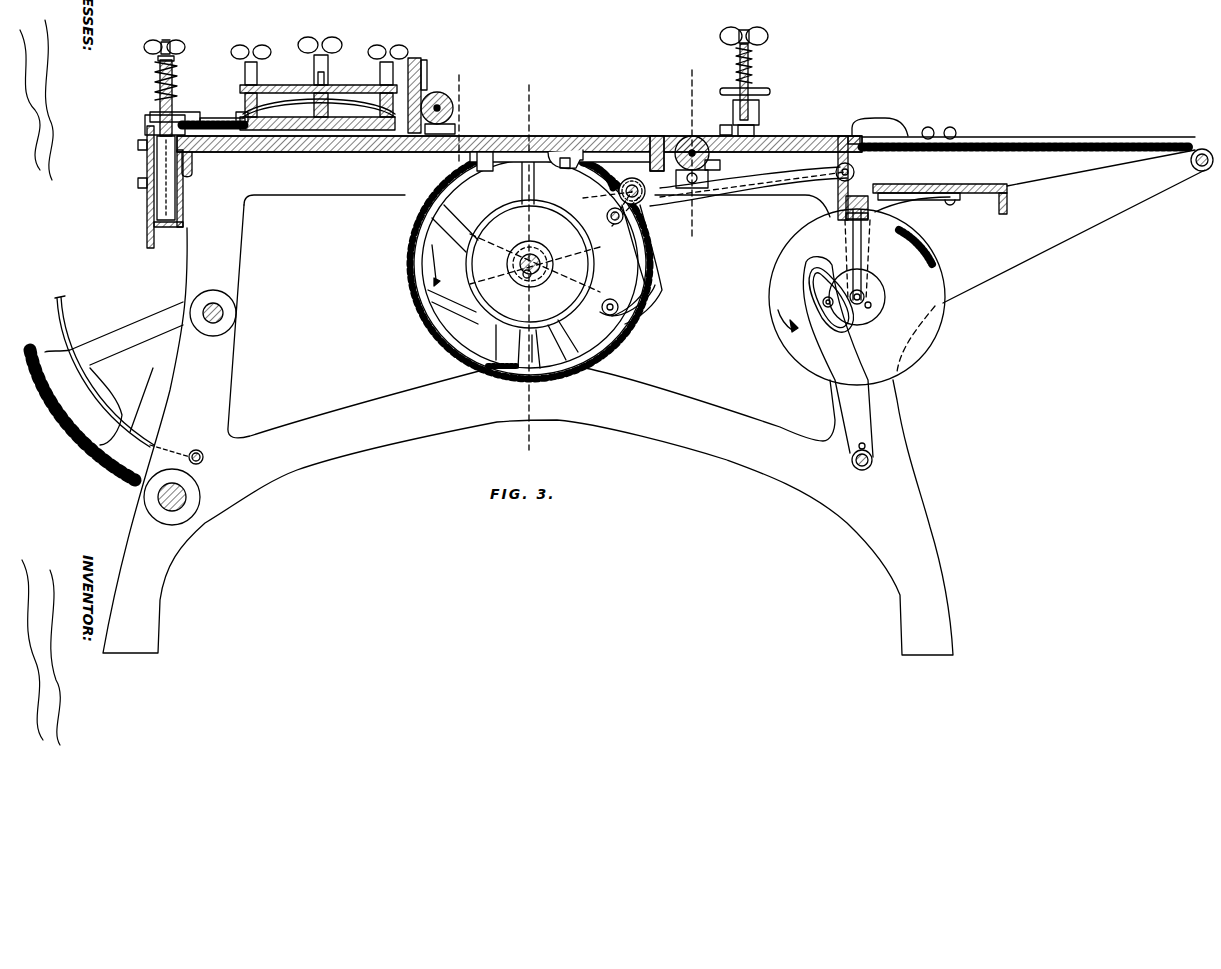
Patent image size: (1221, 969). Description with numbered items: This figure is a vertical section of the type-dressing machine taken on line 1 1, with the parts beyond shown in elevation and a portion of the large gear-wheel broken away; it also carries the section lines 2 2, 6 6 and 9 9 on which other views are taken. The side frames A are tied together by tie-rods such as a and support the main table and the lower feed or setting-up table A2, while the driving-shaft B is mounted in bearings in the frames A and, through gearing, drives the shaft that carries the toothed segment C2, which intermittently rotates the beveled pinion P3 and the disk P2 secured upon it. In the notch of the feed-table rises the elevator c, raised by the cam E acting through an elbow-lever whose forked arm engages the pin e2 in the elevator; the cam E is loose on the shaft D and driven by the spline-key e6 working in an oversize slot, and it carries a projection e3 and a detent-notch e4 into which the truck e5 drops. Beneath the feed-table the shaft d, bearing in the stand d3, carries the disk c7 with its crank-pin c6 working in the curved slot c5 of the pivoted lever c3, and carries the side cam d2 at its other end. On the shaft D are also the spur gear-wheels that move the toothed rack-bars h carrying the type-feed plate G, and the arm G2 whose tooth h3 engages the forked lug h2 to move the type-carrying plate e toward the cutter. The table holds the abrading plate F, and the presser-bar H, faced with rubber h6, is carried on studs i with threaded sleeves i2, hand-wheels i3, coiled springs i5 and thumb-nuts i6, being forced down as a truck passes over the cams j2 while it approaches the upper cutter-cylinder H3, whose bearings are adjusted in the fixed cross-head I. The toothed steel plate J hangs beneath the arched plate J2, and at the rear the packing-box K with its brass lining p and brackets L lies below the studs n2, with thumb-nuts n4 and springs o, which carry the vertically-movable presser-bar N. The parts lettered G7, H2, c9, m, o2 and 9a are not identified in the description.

The side frames A is at (654, 402).
The feed or setting-up table A2 is at (942, 185).
The driving-shaft B is at (186, 497).
The toothed segment C2 is at (82, 415).
The shaft D is at (519, 262).
The cam E is at (530, 264).
The abrading or grinding plate F is at (545, 150).
The type-feed plate G is at (940, 128).
The arm G2 is at (609, 227).
The toothed segment G7 is at (582, 178).
The presser-bar or cross-head H is at (760, 118).
The lever H2 is at (640, 290).
The upper cutter-cylinder H3 is at (456, 112).
The fixed cross-head I is at (414, 82).
The rectangular steel plate J is at (325, 132).
The arched plate J2 is at (277, 84).
The packing-box K is at (161, 181).
The brackets L is at (166, 178).
The vertically-movable presser-bar N is at (158, 100).
The disk P2 is at (205, 122).
The beveled pinion P3 is at (220, 120).
The tie-rod a is at (868, 462).
The elevator c is at (850, 140).
The pivoted levers c3 is at (812, 262).
The curved slot c5 is at (838, 320).
The crank-pin c6 is at (822, 302).
The disk c7 is at (876, 307).
The arrow/arm c9 is at (821, 344).
The shaft d is at (864, 296).
The side cam d2 is at (920, 252).
The stand d3 is at (863, 255).
The type-carrying steel plate e is at (843, 138).
The pin e2 is at (836, 174).
The projection e3 is at (600, 303).
The detent-notch e4 is at (632, 183).
The truck e5 is at (608, 315).
The spline-key e6 is at (526, 279).
The toothed rack-bars h is at (1020, 142).
The forked lug h2 is at (575, 160).
The tooth h3 is at (605, 205).
The rubber h6 is at (726, 125).
The vertical studs i is at (321, 38).
The threaded sleeve i2 is at (330, 90).
The hand-wheel i3 is at (760, 90).
The coiled springs i5 is at (756, 62).
The thumb-nuts i6 is at (765, 35).
The cams j2 is at (712, 150).
The screw m is at (135, 190).
The vertical studs n2 is at (164, 38).
The thumb-nut n4 is at (178, 47).
The spring o is at (174, 66).
The cover o2 is at (882, 130).
The lining-box p is at (175, 190).
The section line 2 2 is at (528, 266).
The section line 6 6 is at (692, 150).
The section line 9 9 is at (454, 112).
The block 9a is at (660, 136).
The section line 1 1 is at (263, 209).